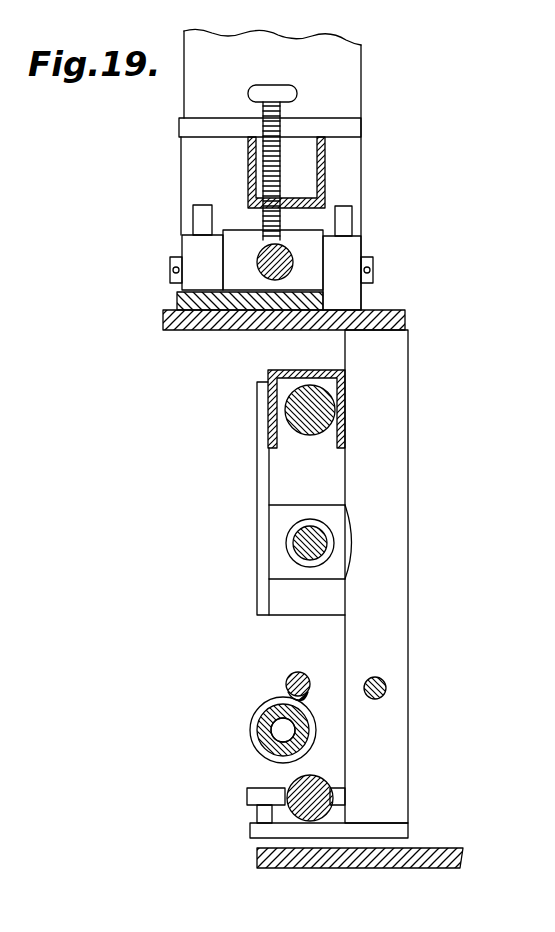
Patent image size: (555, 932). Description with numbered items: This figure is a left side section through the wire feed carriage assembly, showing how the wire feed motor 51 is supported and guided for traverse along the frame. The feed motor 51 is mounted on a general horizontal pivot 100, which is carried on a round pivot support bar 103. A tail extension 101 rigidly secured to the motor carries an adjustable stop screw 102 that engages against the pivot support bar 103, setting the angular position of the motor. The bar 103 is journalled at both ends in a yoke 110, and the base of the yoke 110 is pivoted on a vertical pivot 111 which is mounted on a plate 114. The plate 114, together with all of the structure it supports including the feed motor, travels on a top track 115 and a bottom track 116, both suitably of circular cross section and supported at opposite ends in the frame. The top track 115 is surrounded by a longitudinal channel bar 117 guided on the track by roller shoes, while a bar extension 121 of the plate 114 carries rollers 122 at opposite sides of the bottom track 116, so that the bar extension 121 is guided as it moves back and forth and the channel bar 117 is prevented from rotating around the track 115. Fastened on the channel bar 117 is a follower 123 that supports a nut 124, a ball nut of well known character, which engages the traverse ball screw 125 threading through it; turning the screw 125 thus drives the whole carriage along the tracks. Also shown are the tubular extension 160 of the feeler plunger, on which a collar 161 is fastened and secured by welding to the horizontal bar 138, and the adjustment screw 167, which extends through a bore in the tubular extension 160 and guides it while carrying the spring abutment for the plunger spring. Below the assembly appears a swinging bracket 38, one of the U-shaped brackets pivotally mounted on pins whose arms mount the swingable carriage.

The wire feed motor 51 is at (272, 169).
The adjustable stop screw 102 is at (287, 79).
The tail extension 101 is at (325, 170).
The horizontal pivot 100 is at (373, 270).
The yoke 110 is at (178, 300).
The plate 114 is at (160, 320).
The pivot support bar 103 is at (257, 275).
The vertical pivot 111 is at (227, 313).
The channel bar 117 is at (296, 370).
The top track 115 is at (330, 391).
The bar extension 121 is at (385, 462).
The follower 123 is at (257, 465).
The traverse ball screw 125 is at (293, 532).
The nut 124 is at (288, 566).
The horizontal bar 138 is at (300, 672).
The collar 161 is at (266, 698).
The tubular extension 160 is at (262, 728).
The adjustment screw 167 is at (283, 730).
The bottom track 116 is at (290, 781).
The rollers 122 is at (250, 801).
The swinging bracket 38 is at (405, 861).